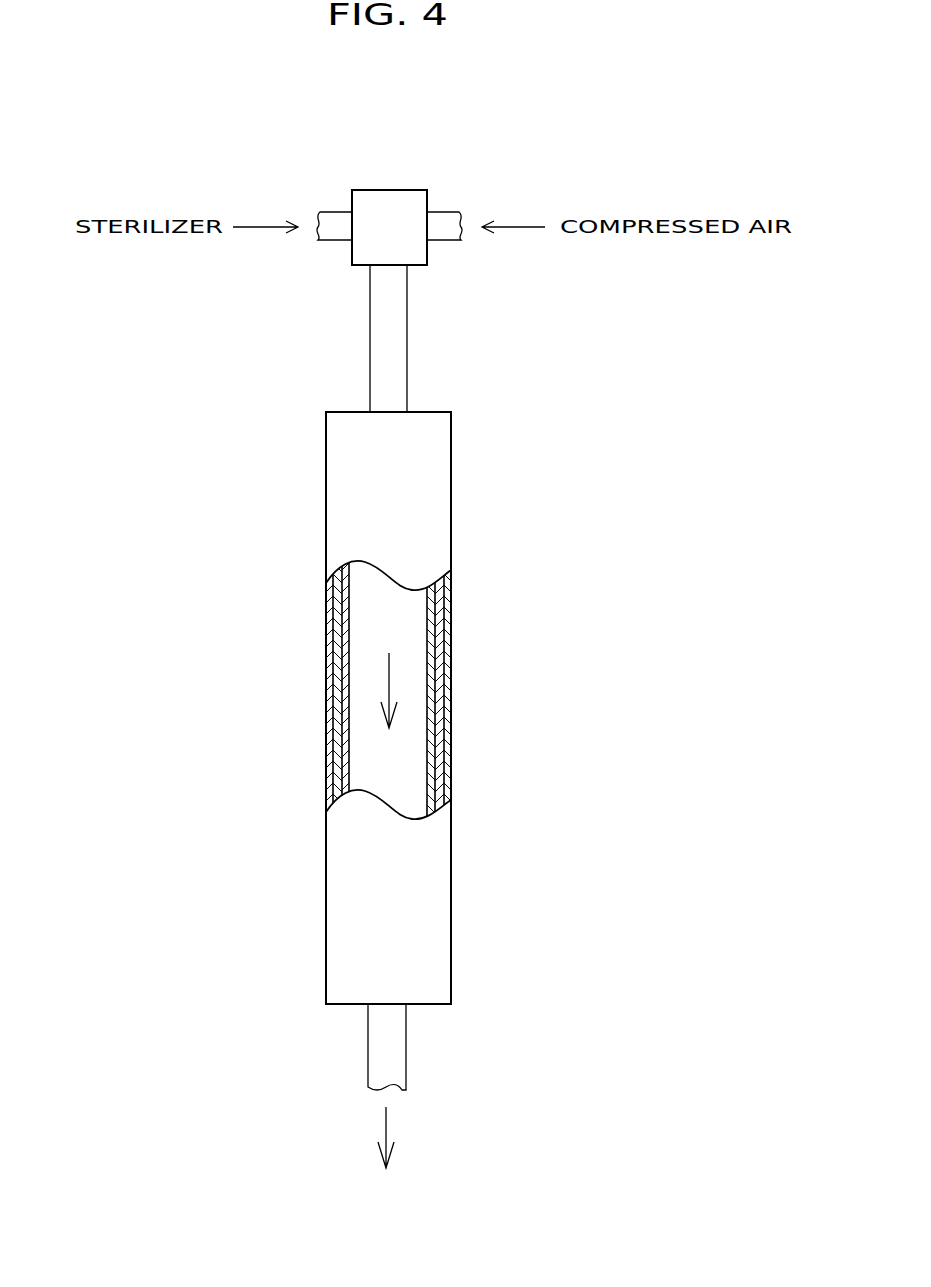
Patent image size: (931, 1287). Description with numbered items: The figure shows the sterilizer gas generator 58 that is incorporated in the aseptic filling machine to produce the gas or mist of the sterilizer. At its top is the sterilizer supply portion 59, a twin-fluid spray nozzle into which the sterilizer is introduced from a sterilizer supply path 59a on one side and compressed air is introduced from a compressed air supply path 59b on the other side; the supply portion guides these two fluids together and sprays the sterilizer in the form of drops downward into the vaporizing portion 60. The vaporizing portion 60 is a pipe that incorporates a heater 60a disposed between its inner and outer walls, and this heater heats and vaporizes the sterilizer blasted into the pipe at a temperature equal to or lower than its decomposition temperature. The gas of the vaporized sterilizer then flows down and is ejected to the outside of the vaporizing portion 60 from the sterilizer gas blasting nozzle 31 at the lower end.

The sterilizer supply portion 59 is at (391, 241).
The sterilizer supply path 59a is at (340, 243).
The compressed air supply path 59b is at (442, 243).
The sterilizer gas generator 58 is at (392, 708).
The vaporizing portion 60 is at (381, 694).
The heater 60a is at (334, 669).
The sterilizer gas blasting nozzle 31 is at (424, 1049).